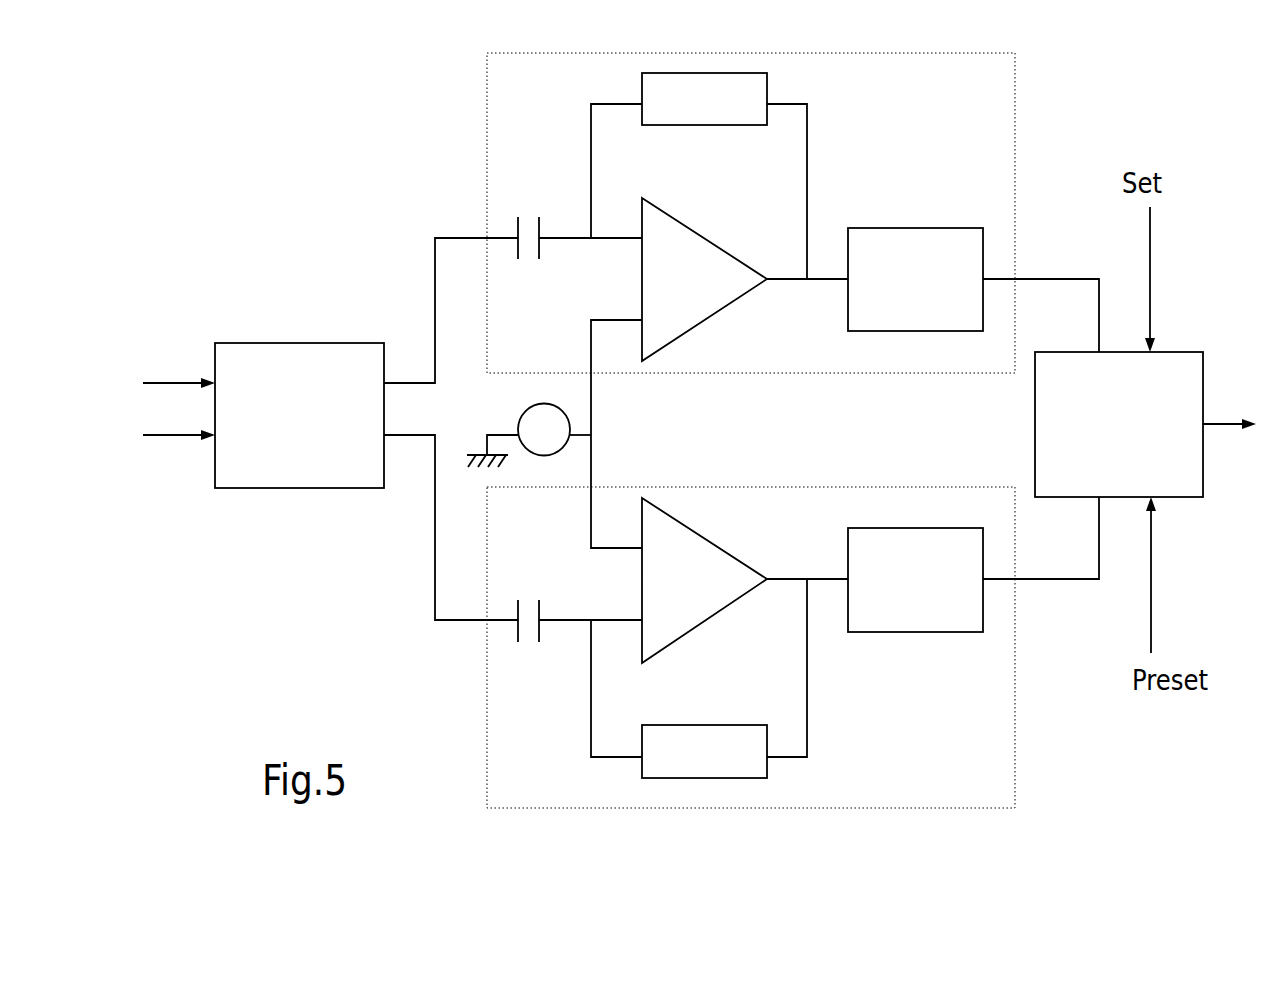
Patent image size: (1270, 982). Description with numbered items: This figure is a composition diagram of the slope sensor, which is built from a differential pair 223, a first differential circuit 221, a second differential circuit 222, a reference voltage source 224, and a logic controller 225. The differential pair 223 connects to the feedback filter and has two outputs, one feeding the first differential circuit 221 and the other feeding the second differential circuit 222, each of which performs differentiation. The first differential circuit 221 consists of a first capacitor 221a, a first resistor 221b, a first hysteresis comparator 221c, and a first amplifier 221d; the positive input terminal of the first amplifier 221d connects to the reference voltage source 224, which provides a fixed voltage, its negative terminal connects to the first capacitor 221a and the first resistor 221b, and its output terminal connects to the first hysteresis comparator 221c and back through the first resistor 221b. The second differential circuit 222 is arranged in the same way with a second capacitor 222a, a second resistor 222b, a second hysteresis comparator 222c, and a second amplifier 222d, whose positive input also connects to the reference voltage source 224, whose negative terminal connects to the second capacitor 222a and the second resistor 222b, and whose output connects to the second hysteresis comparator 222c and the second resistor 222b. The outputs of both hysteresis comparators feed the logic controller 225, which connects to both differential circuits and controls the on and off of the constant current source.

The differential pair 223 is at (304, 343).
The first differential circuit 221 is at (752, 378).
The second differential circuit 222 is at (752, 482).
The first capacitor 221a is at (555, 185).
The first resistor 221b is at (768, 92).
The first hysteresis comparator 221c is at (912, 226).
The first amplifier 221d is at (683, 217).
The second capacitor 222a is at (528, 600).
The second resistor 222b is at (705, 725).
The second hysteresis comparator 222c is at (912, 530).
The second amplifier 222d is at (693, 527).
The reference voltage source 224 is at (560, 403).
The logic controller 225 is at (1182, 352).